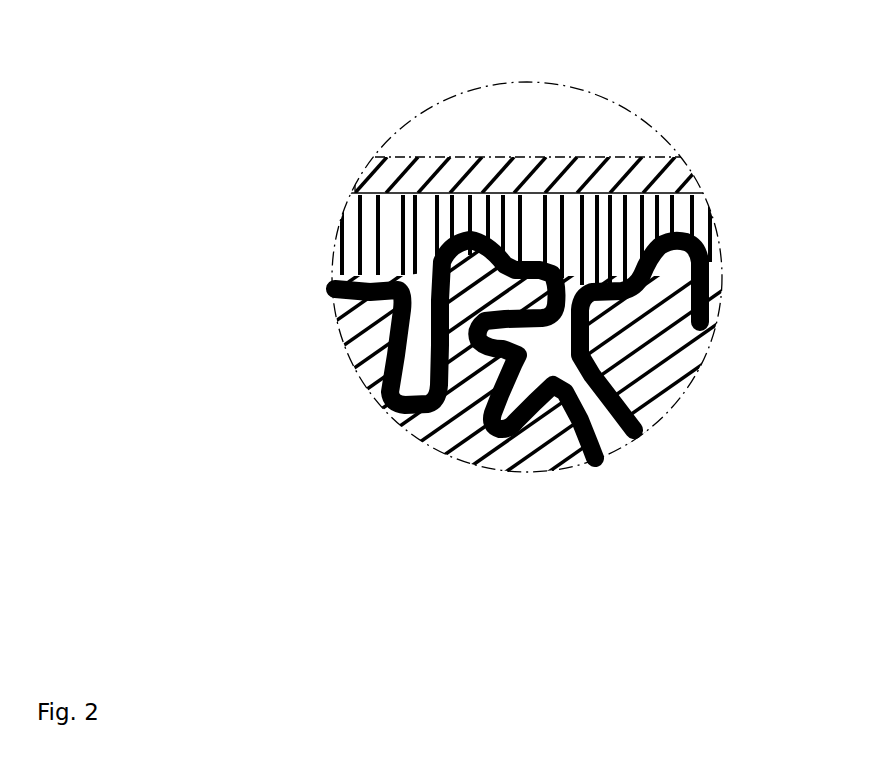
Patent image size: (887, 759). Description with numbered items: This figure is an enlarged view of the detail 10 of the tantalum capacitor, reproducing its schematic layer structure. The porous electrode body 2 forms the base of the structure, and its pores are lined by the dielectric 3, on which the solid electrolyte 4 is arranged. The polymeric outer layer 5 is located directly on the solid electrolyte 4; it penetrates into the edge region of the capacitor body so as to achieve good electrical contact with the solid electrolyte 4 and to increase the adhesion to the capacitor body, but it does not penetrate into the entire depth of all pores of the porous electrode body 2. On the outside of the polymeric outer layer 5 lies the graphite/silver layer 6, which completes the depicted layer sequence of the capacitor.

The detail 10 is at (443, 102).
The graphite/silver layer 6 is at (677, 167).
The polymeric outer layer 5 is at (370, 231).
The porous electrode body 2 is at (447, 427).
The dielectric 3 is at (583, 437).
The solid electrolyte 4 is at (627, 441).